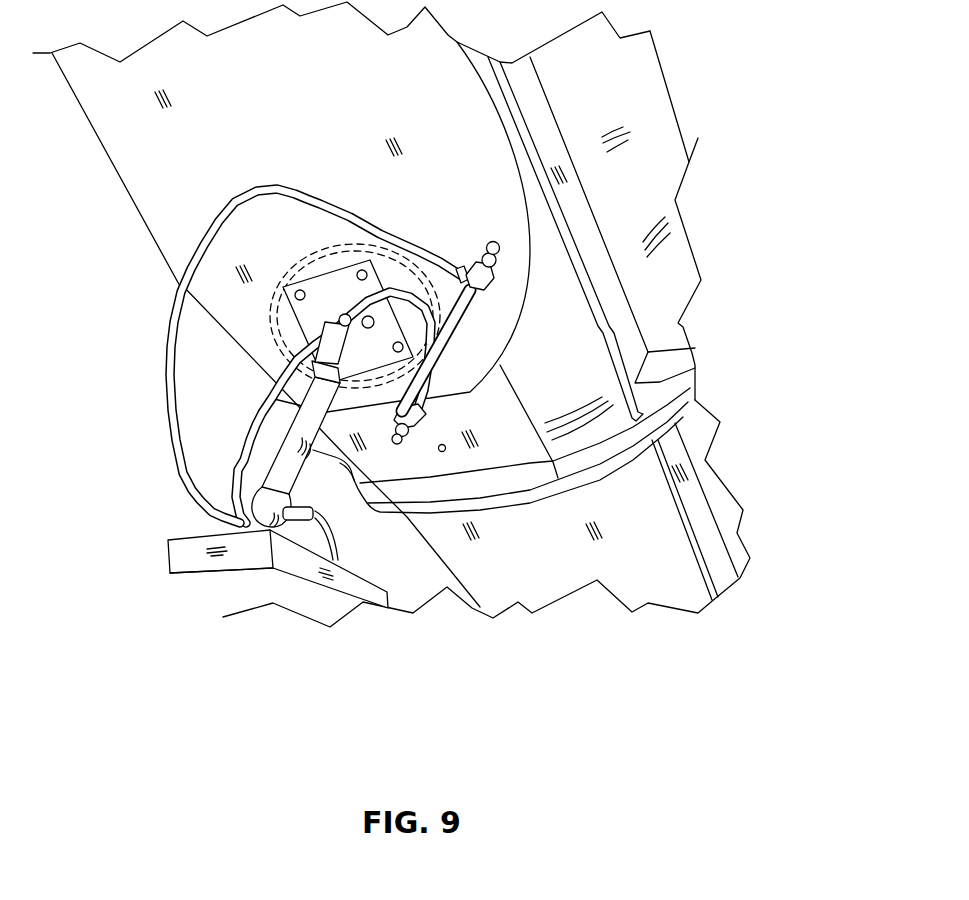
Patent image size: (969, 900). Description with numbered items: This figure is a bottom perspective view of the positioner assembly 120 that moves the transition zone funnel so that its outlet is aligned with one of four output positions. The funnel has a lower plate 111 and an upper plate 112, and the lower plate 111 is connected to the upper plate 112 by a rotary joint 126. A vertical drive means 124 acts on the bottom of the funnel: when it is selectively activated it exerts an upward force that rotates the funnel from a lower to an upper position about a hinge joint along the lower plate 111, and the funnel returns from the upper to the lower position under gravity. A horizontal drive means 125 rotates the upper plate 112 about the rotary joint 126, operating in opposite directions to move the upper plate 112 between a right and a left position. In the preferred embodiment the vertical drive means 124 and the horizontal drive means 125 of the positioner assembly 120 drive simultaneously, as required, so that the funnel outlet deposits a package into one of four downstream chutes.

The lower plate 111 is at (475, 163).
The upper plate 112 is at (487, 402).
The positioner assembly 120 is at (508, 258).
The vertical drive means 124 is at (285, 472).
The horizontal drive means 125 is at (443, 360).
The rotary joint 126 is at (277, 323).